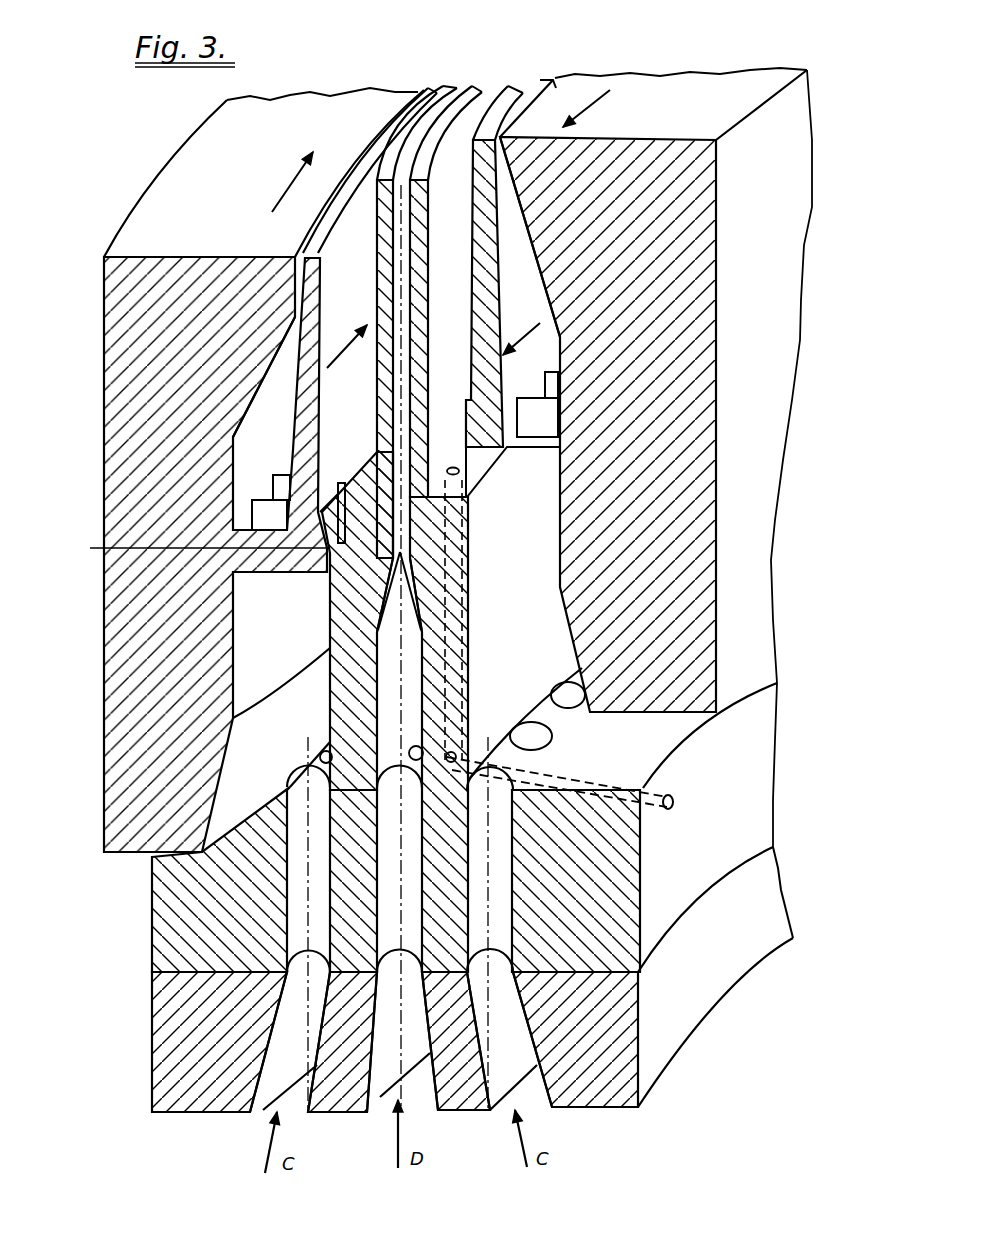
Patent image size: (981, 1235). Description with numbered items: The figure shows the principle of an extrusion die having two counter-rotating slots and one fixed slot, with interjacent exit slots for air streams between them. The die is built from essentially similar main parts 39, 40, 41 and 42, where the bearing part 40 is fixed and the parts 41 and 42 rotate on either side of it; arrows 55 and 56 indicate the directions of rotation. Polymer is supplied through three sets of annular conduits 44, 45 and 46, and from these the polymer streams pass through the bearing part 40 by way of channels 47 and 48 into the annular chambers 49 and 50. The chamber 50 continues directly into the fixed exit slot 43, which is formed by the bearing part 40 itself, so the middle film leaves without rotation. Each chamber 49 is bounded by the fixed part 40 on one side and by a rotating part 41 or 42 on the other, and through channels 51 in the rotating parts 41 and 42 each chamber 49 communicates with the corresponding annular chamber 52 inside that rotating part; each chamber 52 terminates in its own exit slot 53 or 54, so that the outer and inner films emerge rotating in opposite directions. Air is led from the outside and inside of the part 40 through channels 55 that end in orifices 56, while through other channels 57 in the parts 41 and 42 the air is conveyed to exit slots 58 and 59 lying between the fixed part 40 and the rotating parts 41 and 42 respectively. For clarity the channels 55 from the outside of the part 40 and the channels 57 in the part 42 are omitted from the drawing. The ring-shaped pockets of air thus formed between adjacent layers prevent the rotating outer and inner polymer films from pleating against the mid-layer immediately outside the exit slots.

The main part 39 is at (197, 1075).
The bearing part 40 is at (363, 597).
The rotating part 41 is at (147, 393).
The rotating part 42 is at (640, 517).
The fixed exit slot 43 is at (472, 105).
The annular conduit 44 is at (290, 1036).
The annular conduit 45 is at (395, 1003).
The annular conduit 46 is at (512, 1053).
The channel 47 is at (297, 817).
The channel 48 is at (387, 866).
The annular chamber 49 is at (253, 747).
The annular chamber 50 is at (398, 655).
The channel 51 is at (268, 490).
The annular chamber 52 is at (263, 443).
The exit slot 53 is at (383, 140).
The exit slot 54 is at (560, 90).
The arrow / air channel 55 is at (277, 187).
The arrow / orifice 56 is at (600, 105).
The channel 57 is at (330, 548).
The exit slot 58 is at (428, 108).
The exit slot 59 is at (512, 95).